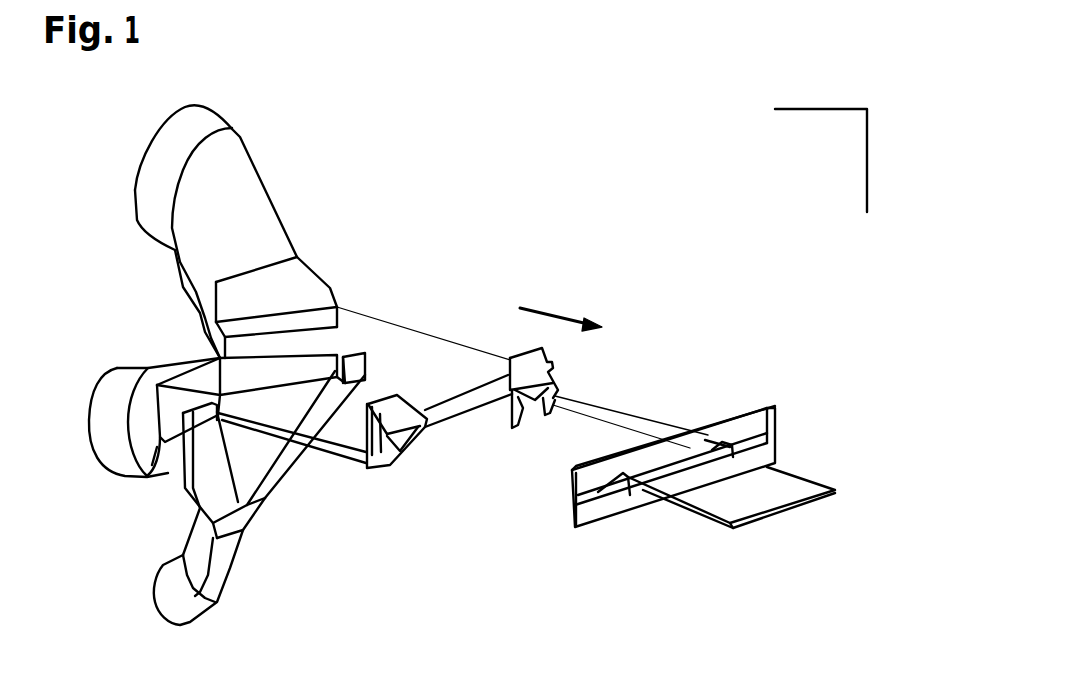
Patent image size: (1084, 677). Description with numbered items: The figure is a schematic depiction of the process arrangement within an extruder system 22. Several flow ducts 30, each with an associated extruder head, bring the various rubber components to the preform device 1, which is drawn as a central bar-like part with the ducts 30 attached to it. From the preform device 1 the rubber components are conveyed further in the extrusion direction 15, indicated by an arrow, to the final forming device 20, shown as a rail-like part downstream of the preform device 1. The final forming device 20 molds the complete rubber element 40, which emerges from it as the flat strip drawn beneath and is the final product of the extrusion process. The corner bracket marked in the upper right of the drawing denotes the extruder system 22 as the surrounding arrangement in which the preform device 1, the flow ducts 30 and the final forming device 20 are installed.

The preform device 1 is at (477, 428).
The extrusion direction 15 is at (550, 315).
The final forming device 20 is at (740, 423).
The extruder system 22 is at (867, 155).
The flow ducts 30 is at (337, 285).
The complete rubber element 40 is at (762, 503).